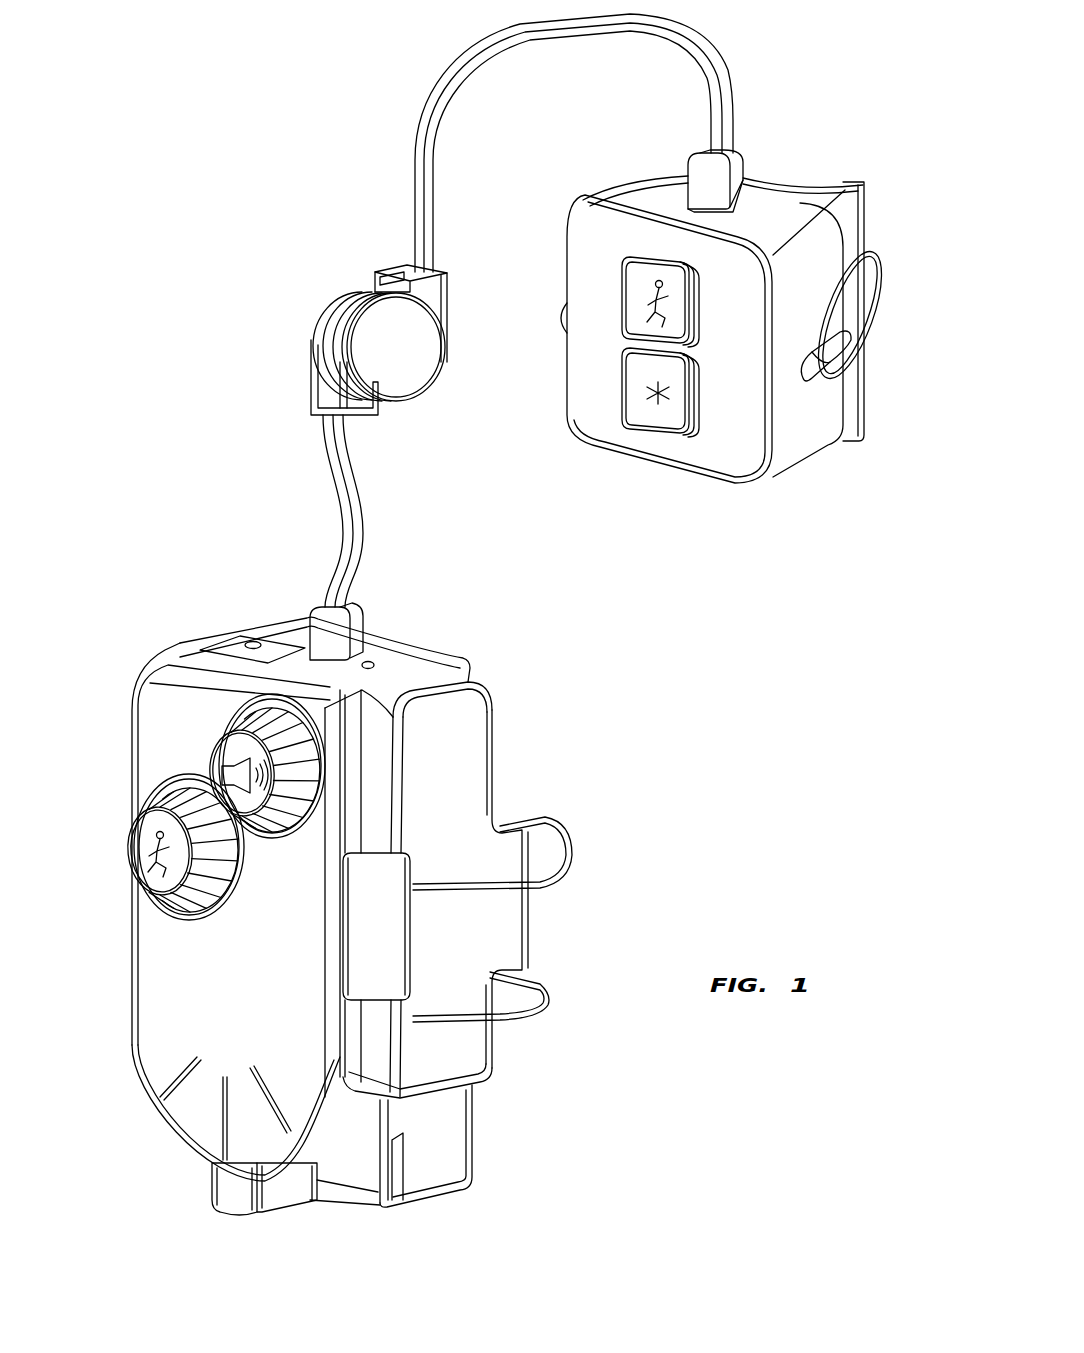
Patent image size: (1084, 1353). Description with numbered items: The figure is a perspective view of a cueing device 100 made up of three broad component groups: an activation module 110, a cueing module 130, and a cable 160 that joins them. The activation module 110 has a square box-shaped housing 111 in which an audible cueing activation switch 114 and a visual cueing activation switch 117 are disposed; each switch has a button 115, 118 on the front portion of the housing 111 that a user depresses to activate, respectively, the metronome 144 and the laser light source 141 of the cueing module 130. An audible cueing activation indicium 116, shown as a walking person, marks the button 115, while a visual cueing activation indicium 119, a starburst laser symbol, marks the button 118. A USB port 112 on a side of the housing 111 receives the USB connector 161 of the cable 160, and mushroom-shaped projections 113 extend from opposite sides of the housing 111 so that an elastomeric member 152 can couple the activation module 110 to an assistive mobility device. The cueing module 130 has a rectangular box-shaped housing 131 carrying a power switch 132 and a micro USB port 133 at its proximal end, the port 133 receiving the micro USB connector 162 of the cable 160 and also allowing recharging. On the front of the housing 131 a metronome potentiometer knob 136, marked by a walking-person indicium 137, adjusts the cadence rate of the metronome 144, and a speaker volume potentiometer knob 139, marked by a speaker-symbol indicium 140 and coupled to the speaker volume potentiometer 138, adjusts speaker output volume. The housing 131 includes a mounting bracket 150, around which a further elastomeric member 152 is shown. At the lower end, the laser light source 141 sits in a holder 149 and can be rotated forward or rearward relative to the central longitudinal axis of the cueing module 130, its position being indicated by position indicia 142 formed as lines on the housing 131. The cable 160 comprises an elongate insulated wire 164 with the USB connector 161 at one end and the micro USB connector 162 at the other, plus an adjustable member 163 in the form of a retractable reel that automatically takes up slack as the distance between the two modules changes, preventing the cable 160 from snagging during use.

The cueing device 100 is at (262, 133).
The activation module 110 is at (681, 572).
The housing 111 is at (832, 263).
The USB port 112 is at (692, 203).
The mushroom-shaped projections 113 is at (560, 316).
The audible cueing activation switch 114 is at (628, 257).
The button 115 is at (630, 277).
The audible cueing activation indicium 116 is at (650, 302).
The visual cueing activation switch 117 is at (630, 431).
The button 118 is at (630, 368).
The visual cueing activation indicium 119 is at (646, 393).
The cueing module 130 is at (505, 1040).
The housing 131 is at (428, 655).
The power switch 132 is at (227, 632).
The micro USB port 133 is at (283, 636).
The metronome potentiometer knob 136 is at (152, 858).
The indicium 137 is at (187, 905).
The speaker volume potentiometer 138 is at (143, 677).
The speaker volume potentiometer knob 139 is at (300, 795).
The indicium 140 is at (300, 823).
The laser light source 141 is at (290, 1213).
The position indicium 142 is at (160, 1068).
The metronome 144 is at (187, 785).
The holder 149 is at (238, 1193).
The mounting bracket 150 is at (470, 920).
The elastomeric member 152 is at (858, 336).
The cable 160 is at (415, 405).
The USB connector 161 is at (743, 177).
The micro USB connector 162 is at (330, 625).
The adjustable member 163 is at (313, 300).
The elongate insulated wire 164 is at (487, 40).